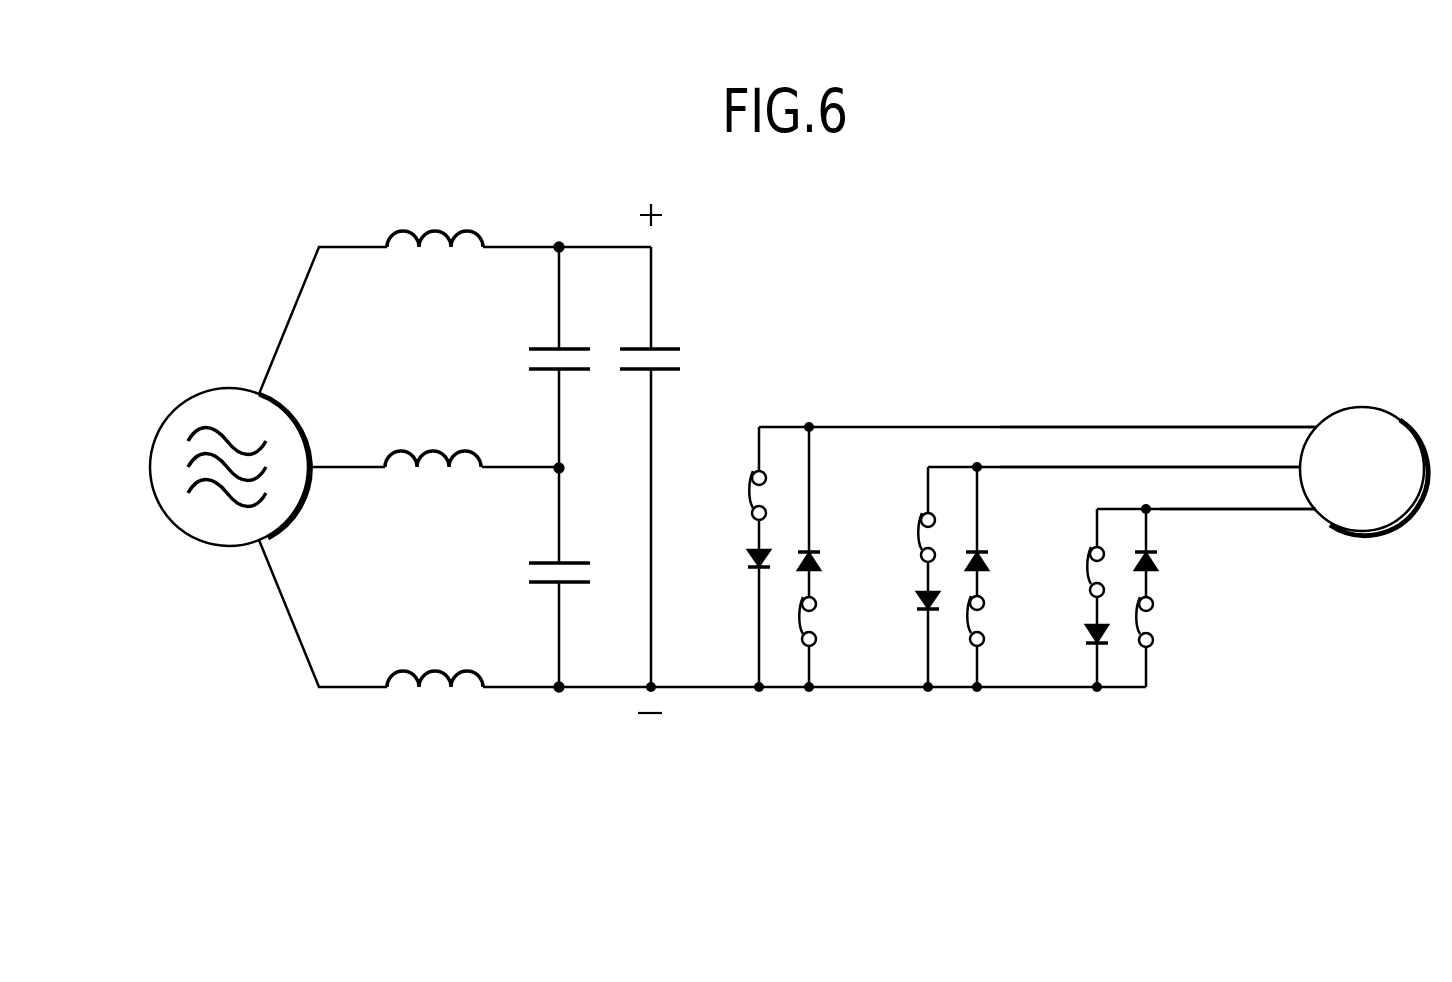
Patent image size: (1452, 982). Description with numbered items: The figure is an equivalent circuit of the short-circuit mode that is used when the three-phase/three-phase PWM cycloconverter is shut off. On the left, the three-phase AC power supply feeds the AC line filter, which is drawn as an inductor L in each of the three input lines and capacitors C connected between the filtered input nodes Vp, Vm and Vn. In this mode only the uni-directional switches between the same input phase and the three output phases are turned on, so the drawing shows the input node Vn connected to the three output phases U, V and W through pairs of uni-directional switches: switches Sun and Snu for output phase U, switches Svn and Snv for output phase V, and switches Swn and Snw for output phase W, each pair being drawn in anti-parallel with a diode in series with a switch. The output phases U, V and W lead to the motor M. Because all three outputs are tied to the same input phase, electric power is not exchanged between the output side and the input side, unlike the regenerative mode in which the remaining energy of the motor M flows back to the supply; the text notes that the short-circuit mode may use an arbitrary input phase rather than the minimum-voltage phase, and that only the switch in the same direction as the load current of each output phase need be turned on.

The inductor L is at (434, 441).
The capacitor C is at (609, 446).
The positive DC node Vp is at (538, 225).
The middle DC node Vm is at (537, 448).
The negative DC node Vn is at (537, 670).
The U-phase upper switch Sun is at (732, 557).
The uni-directional switch Snu is at (837, 557).
The V-phase upper switch Svn is at (900, 577).
The uni-directional switch Snv is at (1004, 577).
The W-phase upper switch Swn is at (1065, 598).
The uni-directional switch Snw is at (1175, 598).
The U-phase output line U is at (1270, 427).
The V-phase output line V is at (1220, 467).
The W-phase output line W is at (1250, 509).
The motor M is at (1364, 471).